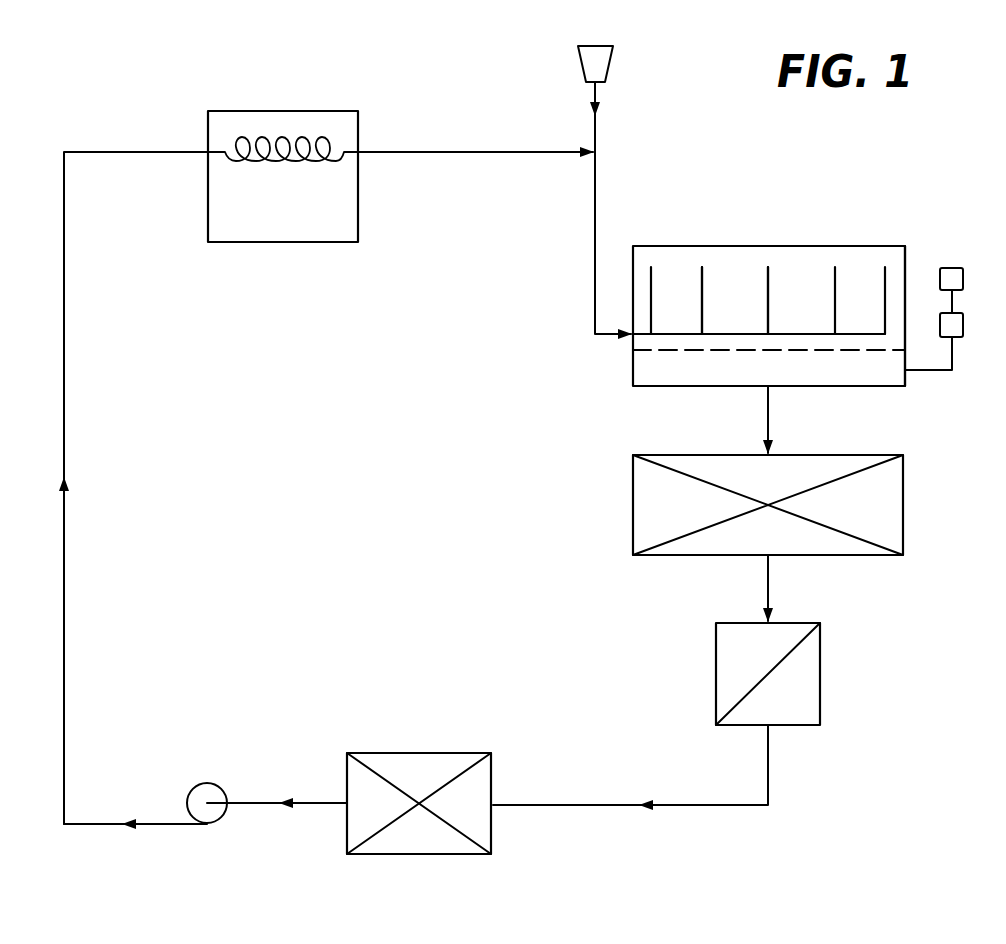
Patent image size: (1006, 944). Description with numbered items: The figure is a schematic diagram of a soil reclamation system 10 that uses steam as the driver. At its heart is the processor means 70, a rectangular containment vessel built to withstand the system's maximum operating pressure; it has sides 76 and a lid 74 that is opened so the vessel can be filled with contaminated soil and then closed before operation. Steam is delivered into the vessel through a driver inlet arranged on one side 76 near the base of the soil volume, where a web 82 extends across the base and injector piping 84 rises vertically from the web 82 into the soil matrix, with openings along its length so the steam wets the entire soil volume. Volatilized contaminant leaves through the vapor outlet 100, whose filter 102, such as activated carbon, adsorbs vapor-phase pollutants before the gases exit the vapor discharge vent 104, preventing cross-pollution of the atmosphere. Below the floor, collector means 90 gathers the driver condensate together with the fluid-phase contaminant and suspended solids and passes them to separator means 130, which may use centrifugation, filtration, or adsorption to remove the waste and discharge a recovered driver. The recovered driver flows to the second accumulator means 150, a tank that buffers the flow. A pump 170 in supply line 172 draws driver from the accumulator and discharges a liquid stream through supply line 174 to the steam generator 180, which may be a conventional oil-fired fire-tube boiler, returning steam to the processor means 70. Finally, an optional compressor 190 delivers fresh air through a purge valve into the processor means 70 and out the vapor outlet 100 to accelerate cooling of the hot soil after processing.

The soil reclamation system 10 is at (425, 413).
The processor means 70 is at (744, 236).
The lid 74 is at (855, 246).
The sides 76 is at (632, 260).
The web 82 is at (733, 332).
The injector piping 84 is at (771, 285).
The collector means 90 is at (903, 495).
The vapor outlet 100 is at (955, 326).
The filter 102 is at (963, 328).
The vapor discharge vent 104 is at (953, 277).
The separator means 130 is at (820, 668).
The second accumulator means 150 is at (464, 752).
The pump 170 is at (200, 782).
The supply line 172 is at (305, 808).
The supply line 174 is at (66, 624).
The steam generator 180 is at (266, 111).
The compressor 190 is at (614, 56).